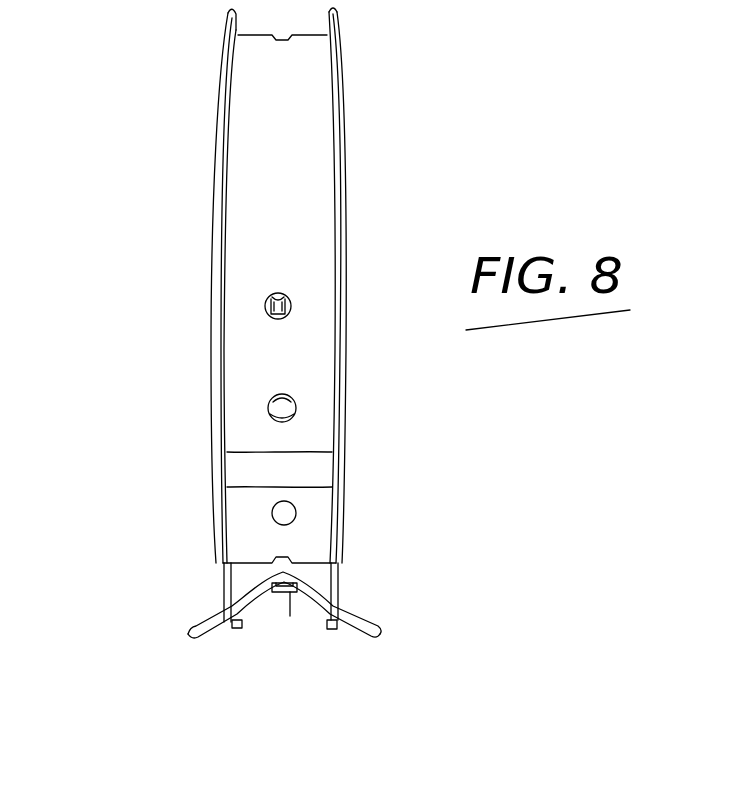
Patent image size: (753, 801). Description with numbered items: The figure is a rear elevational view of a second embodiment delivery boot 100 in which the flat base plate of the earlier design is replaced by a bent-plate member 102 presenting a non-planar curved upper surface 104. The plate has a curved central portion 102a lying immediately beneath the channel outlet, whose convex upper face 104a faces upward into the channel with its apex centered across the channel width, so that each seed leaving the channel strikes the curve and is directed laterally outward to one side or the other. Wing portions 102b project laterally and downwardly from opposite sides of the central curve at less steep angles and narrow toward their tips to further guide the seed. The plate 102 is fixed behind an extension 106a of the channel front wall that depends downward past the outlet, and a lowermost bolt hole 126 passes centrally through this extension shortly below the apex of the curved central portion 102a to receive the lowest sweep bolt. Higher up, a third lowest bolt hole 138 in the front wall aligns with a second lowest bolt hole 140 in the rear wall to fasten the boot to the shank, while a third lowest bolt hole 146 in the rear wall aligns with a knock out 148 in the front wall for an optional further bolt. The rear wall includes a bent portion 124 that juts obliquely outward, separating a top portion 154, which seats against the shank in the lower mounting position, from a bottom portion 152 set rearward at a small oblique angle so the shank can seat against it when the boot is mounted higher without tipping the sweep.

The delivery boot 100 is at (85, 136).
The member 102 is at (199, 608).
The curved central portion 102a is at (298, 602).
The wing portions 102b is at (214, 633).
The upper surface 104 is at (338, 604).
The convex upper face 104a is at (322, 570).
The extension of the channel front wall 106a is at (255, 621).
The bent portion 124 is at (287, 468).
The lowermost bolt hole 126 is at (274, 592).
The third lowest bolt hole 138 is at (297, 412).
The second lowest bolt hole 140 is at (268, 412).
The third lowest bolt hole 146 is at (280, 293).
The knock out 148 is at (285, 318).
The bottom portion 152 is at (260, 533).
The top portion 154 is at (273, 360).